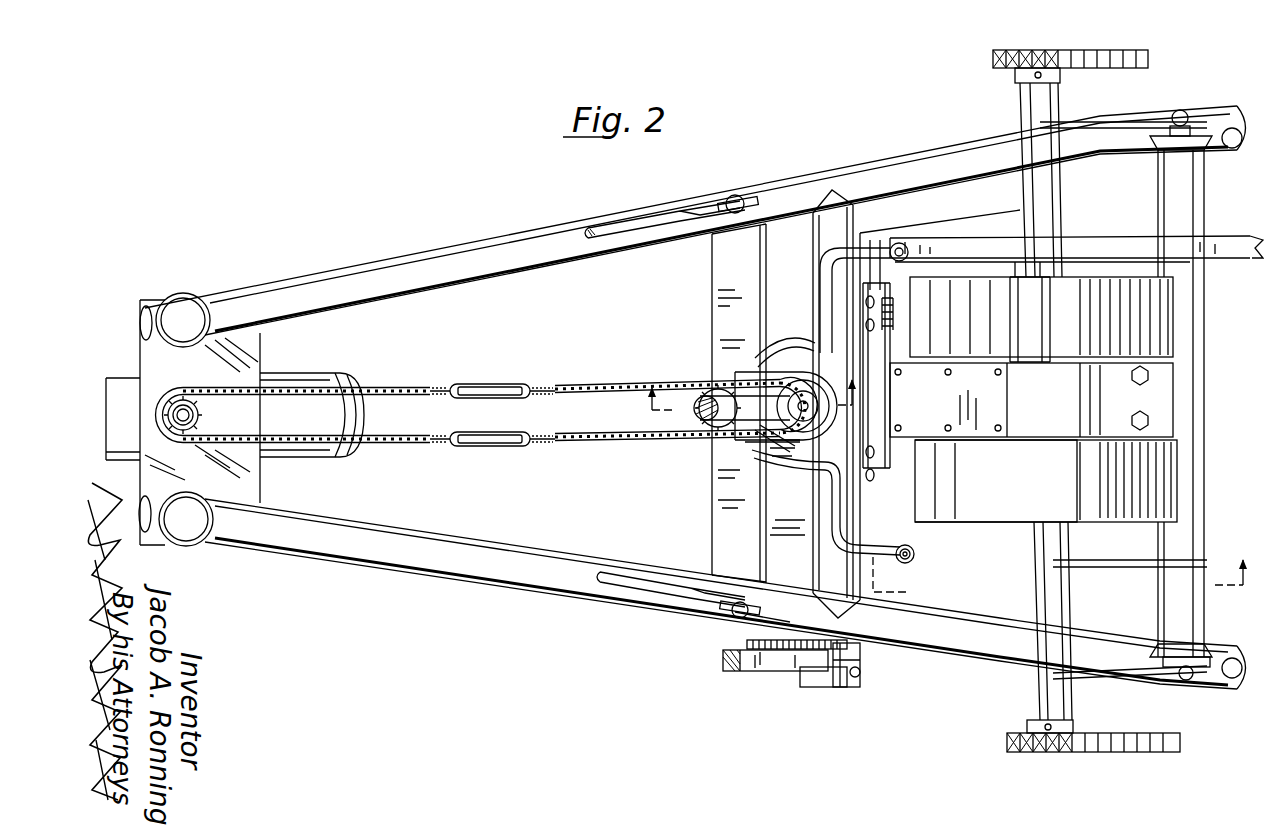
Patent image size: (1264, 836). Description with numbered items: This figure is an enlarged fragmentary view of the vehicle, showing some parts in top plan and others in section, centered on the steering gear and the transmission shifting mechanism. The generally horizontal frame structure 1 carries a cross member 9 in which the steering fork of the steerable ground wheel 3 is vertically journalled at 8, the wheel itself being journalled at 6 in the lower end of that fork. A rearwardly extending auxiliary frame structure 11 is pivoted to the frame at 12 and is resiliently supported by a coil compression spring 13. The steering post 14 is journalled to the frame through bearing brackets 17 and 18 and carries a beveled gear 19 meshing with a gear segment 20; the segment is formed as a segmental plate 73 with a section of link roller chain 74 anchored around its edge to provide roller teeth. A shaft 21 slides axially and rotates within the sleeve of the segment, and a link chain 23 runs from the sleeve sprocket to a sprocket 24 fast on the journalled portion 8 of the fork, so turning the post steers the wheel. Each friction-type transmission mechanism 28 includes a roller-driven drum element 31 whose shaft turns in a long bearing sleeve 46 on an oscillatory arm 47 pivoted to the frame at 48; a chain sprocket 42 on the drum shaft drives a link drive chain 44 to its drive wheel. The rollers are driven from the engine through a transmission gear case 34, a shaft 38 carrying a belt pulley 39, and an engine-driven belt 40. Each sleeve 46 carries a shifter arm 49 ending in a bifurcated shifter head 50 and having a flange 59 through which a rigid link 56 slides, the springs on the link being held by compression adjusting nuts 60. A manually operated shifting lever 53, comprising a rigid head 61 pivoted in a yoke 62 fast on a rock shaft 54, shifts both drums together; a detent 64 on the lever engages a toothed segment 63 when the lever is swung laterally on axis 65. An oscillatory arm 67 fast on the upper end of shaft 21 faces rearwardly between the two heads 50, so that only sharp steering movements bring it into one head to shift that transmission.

The frame structure 1 is at (520, 233).
The steerable ground wheel 3 is at (352, 416).
The journal of steerable wheel 6 is at (735, 408).
The journalled portion of steering fork 8 is at (175, 417).
The cross member 9 is at (198, 367).
The auxiliary frame structure 11 is at (640, 225).
The pivot of auxiliary frame 12 is at (736, 195).
The coil compression spring 13 is at (196, 297).
The steering post 14 is at (703, 400).
The bearing bracket 17 is at (747, 377).
The bearing bracket 18 is at (730, 472).
The beveled gear 19 is at (704, 388).
The gear segment 20 is at (801, 370).
The shaft 21 is at (772, 413).
The link chain 23 is at (373, 386).
The sprocket 24 is at (205, 410).
The transmission mechanism 28 is at (1130, 318).
The drum element 31 is at (1150, 338).
The transmission gear case 34 is at (1058, 404).
The shaft 38 is at (1023, 270).
The belt pulley 39 is at (1083, 234).
The engine-driven belt 40 is at (1217, 240).
The chain sprocket 42 is at (1033, 52).
The link drive chain 44 is at (1117, 52).
The bearing sleeve 46 is at (1033, 107).
The oscillatory drum-mounting arm 47 is at (1100, 122).
The pivot of drum-mounting arm 48 is at (1181, 112).
The shifter arm 49 is at (867, 247).
The shifter head 50 is at (778, 348).
The shifting lever 53 is at (760, 665).
The rock shaft 54 is at (850, 690).
The rigid link 56 is at (906, 245).
The shifter arm flange 59 is at (993, 222).
The compression adjusting nut 60 is at (900, 256).
The rigid head 61 is at (812, 675).
The yoke 62 is at (862, 678).
The toothed segment 63 is at (792, 642).
The detent 64 is at (790, 650).
The axis 65 is at (857, 663).
The oscillatory arm 67 is at (737, 378).
The segmental plate 73 is at (797, 372).
The section of link roller chain 74 is at (824, 335).